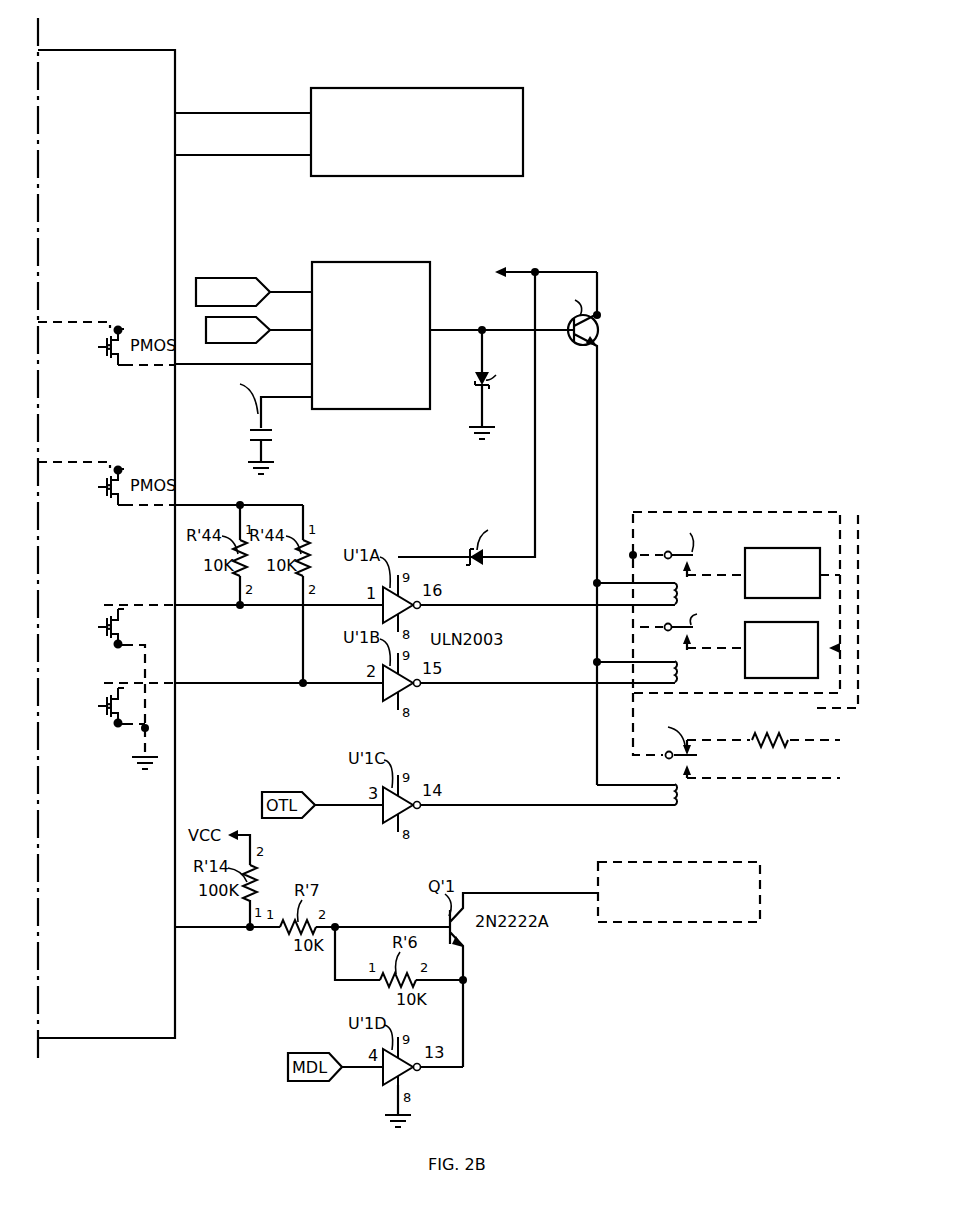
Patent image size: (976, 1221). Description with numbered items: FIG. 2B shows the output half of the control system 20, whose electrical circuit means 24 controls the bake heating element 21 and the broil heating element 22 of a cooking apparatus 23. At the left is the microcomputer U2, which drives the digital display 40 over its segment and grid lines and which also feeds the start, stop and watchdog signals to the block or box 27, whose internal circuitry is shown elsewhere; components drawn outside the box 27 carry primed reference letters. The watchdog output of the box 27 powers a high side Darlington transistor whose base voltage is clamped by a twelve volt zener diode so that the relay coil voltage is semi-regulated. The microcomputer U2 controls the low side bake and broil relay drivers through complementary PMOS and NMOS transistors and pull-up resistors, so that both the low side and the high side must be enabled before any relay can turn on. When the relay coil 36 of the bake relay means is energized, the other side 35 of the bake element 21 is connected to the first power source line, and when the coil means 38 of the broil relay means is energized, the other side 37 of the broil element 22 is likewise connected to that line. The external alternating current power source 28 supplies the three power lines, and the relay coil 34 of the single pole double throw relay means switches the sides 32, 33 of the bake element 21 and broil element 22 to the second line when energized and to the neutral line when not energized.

The microcomputer U2 is at (143, 50).
The control system 20 is at (663, 136).
The bake heating element 21 is at (790, 548).
The broil heating element 22 is at (745, 661).
The cooking apparatus 23 is at (729, 586).
The electrical circuit means 24 is at (672, 269).
The block or box 27 is at (393, 262).
The external electrical power source 28 is at (730, 807).
The side of bake element 32 is at (820, 573).
The side of broil element 33 is at (818, 640).
The relay coil 34 is at (683, 792).
The other side of bake element 35 is at (745, 573).
The relay coil 36 is at (668, 600).
The other side of broil element 37 is at (745, 647).
The coil means 38 is at (670, 660).
The digital display 40 is at (523, 118).